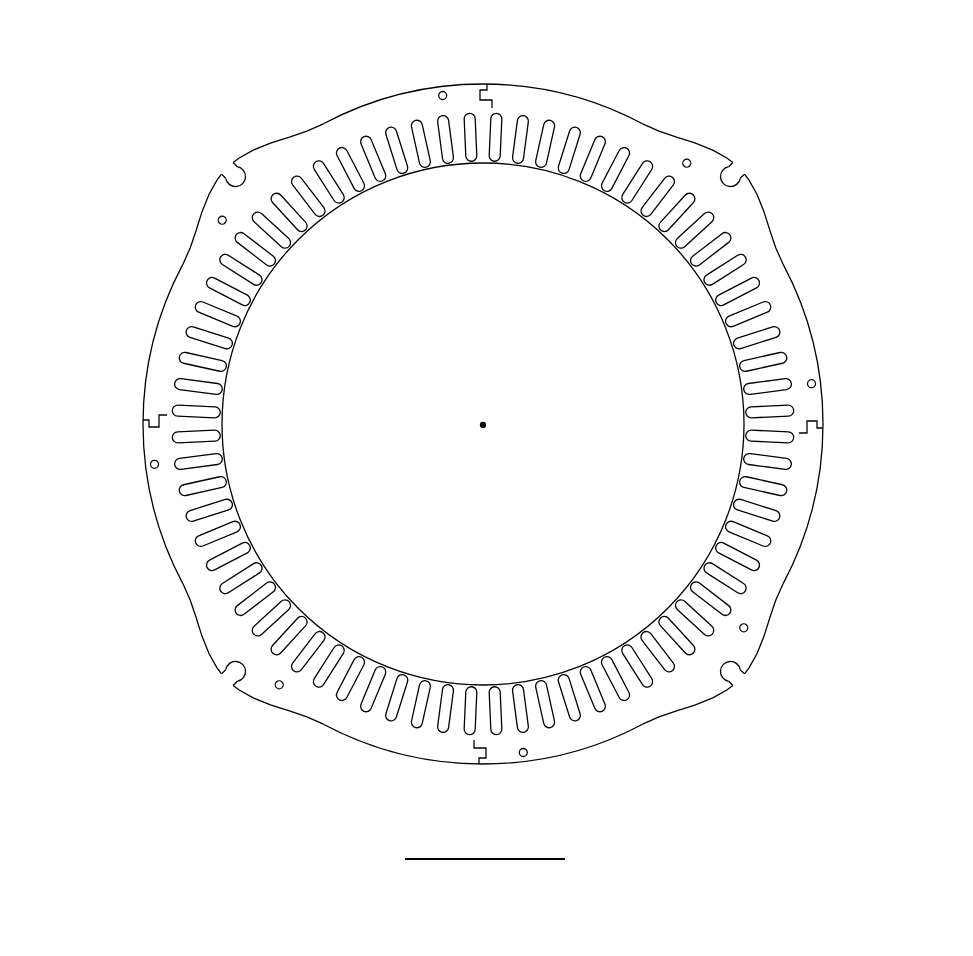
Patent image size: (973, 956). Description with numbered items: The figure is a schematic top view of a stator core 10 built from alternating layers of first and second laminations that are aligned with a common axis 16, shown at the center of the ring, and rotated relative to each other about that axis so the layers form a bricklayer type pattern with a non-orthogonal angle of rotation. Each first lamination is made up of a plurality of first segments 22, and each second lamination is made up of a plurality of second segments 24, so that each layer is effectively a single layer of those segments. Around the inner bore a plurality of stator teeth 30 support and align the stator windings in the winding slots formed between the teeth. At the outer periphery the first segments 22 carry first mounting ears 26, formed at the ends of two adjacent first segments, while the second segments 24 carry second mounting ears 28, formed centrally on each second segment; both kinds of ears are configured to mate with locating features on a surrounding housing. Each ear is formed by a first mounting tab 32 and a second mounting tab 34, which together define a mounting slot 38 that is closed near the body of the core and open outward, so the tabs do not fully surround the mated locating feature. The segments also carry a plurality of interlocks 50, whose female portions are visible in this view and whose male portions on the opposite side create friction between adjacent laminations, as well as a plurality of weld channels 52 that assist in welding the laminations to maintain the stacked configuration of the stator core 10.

The stator core 10 is at (513, 450).
The common axis 16 is at (512, 388).
The first segments 22 is at (453, 433).
The second segments 24 is at (494, 401).
The first mounting ears 26 is at (484, 423).
The second mounting ears 28 is at (484, 423).
The stator teeth 30 is at (483, 424).
The first mounting tab 32 is at (484, 426).
The second mounting tab 34 is at (484, 464).
The mounting slot 38 is at (463, 386).
The interlocks 50 is at (480, 445).
The weld channels 52 is at (470, 445).